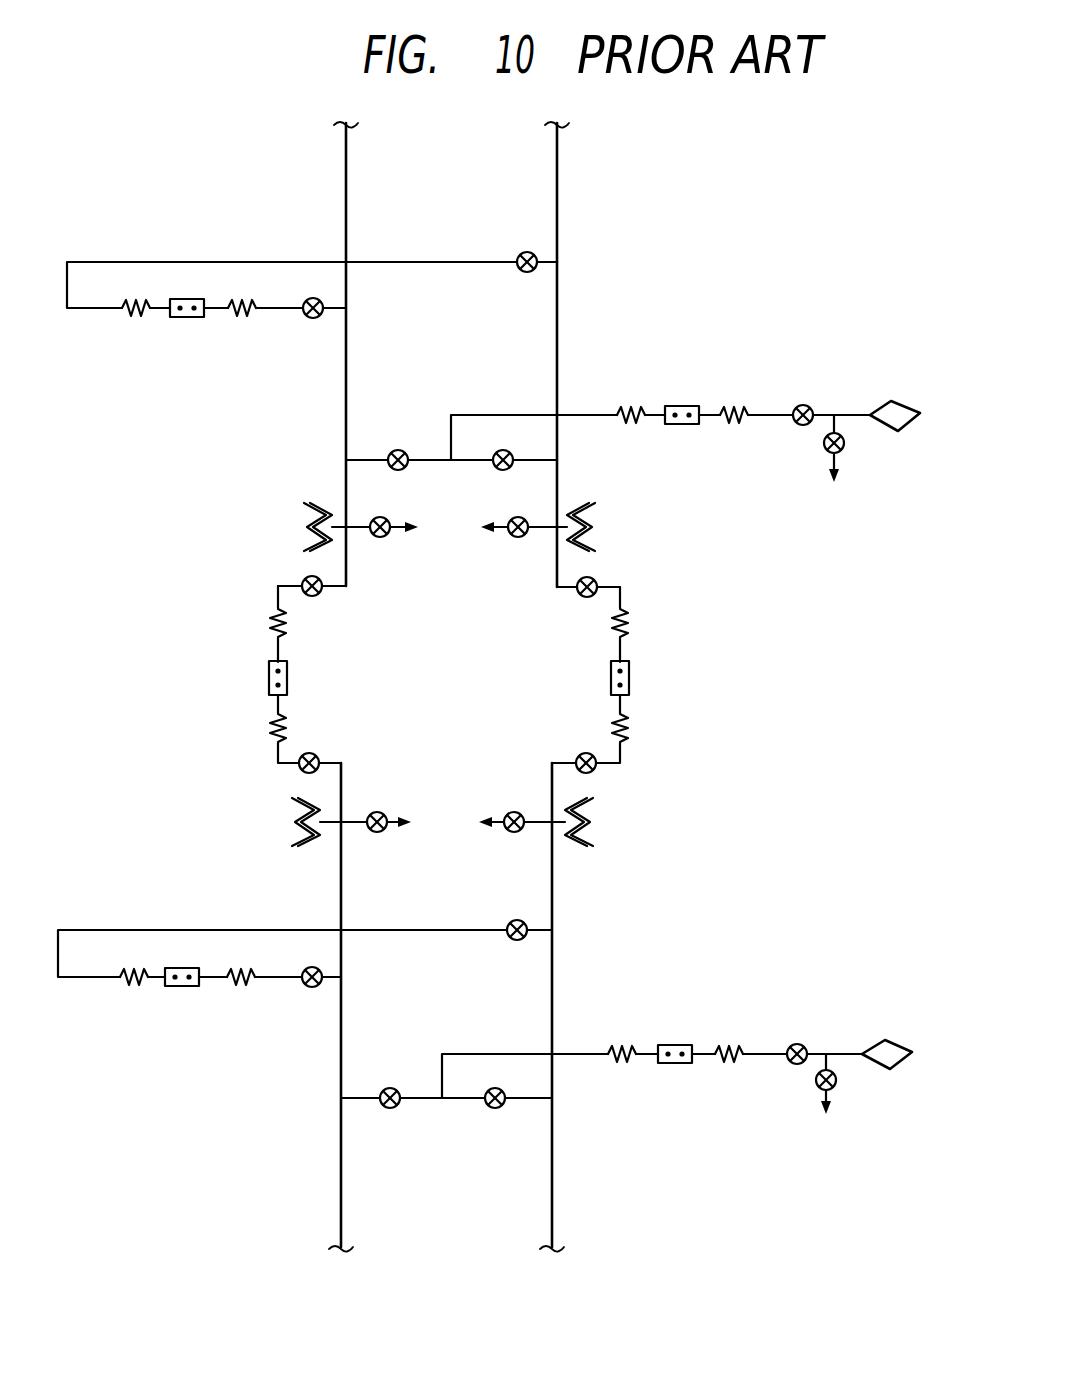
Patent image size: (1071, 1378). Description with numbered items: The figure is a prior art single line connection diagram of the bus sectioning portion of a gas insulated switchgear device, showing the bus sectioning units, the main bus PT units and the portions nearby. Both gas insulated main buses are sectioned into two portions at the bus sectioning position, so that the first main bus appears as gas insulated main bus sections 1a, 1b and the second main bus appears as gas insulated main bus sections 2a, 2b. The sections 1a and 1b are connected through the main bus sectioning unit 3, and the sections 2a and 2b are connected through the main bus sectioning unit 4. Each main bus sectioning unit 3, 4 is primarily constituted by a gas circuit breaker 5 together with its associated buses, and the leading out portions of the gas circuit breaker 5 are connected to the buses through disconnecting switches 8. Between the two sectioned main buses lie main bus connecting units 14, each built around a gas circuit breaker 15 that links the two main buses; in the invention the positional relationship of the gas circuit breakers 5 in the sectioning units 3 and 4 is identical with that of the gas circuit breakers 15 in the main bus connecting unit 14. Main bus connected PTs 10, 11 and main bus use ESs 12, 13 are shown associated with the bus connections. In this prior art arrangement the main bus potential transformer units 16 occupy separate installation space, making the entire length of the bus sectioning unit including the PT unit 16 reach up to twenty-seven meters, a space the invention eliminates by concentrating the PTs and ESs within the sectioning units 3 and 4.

The gas insulated main bus section 1a is at (346, 212).
The gas insulated main bus section 1b is at (341, 1205).
The gas insulated main bus section 2a is at (557, 220).
The gas insulated main bus section 2b is at (552, 1187).
The main bus sectioning unit 3 is at (207, 704).
The main bus sectioning unit 4 is at (699, 711).
The gas circuit breaker 5 is at (268, 672).
The disconnecting switch 8 is at (304, 580).
The main bus connected PT 10 is at (312, 515).
The main bus connected PT 11 is at (590, 535).
The main bus use ES 12 is at (380, 540).
The main bus use ES 13 is at (518, 540).
The main bus connecting unit 14 is at (690, 360).
The gas circuit breaker 15 is at (692, 405).
The main bus potential transformer unit 16 is at (441, 565).